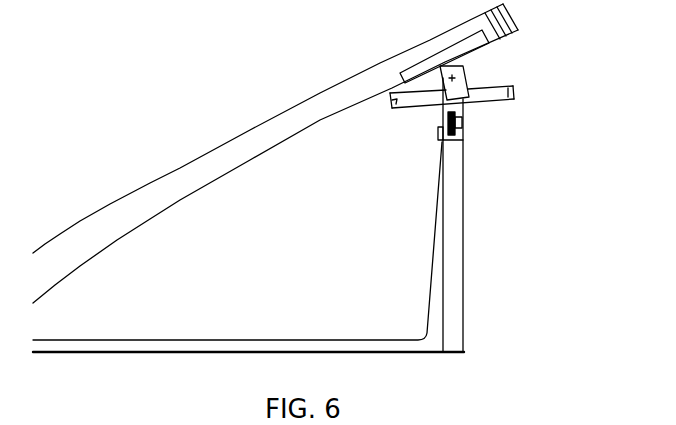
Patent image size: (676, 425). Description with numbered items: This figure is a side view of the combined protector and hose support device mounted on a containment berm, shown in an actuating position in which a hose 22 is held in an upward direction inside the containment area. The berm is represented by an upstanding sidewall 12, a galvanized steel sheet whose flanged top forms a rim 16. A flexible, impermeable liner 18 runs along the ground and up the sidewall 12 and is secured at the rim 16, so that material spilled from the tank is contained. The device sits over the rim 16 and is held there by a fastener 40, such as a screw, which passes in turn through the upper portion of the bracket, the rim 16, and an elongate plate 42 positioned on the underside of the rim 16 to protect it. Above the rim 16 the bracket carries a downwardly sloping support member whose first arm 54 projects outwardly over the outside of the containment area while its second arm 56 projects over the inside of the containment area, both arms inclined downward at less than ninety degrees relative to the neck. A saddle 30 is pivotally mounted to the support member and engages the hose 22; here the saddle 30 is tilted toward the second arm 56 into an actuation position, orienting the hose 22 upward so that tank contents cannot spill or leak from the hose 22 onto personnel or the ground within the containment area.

The sidewall 12 is at (450, 274).
The rim 16 is at (457, 135).
The liner 18 is at (437, 323).
The hose 22 is at (260, 143).
The saddle 30 is at (462, 52).
The fastener 40 is at (455, 113).
The plate 42 is at (458, 128).
The first arm 54 is at (507, 95).
The second arm 56 is at (393, 96).